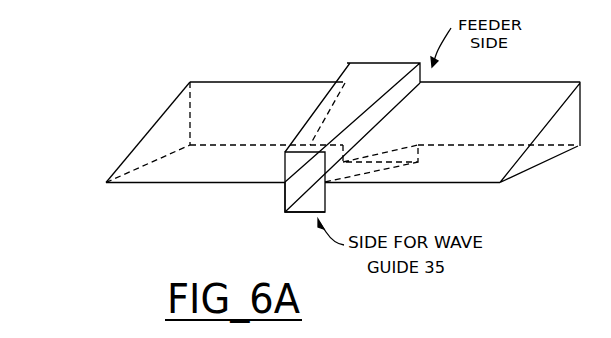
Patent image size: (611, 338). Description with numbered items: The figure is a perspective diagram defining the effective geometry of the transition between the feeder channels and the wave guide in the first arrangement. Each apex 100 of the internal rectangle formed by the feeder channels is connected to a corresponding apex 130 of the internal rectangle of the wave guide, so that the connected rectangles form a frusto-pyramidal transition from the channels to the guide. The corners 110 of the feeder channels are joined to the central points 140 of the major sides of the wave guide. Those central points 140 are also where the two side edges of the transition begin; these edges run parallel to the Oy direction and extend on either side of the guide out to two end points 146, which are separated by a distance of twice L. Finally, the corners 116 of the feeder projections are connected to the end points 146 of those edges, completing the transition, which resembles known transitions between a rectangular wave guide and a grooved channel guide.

The apex of the internal rectangle formed by the feeder channels 100 is at (346, 63).
The corner of the feeder channels 110 is at (343, 82).
The corner of the feeder projections 116 is at (190, 82).
The apex of the internal rectangle of the wave guide 130 is at (285, 156).
The central point of the major sides of the wave guide 140 is at (285, 188).
The end point of the edges 146 is at (107, 183).